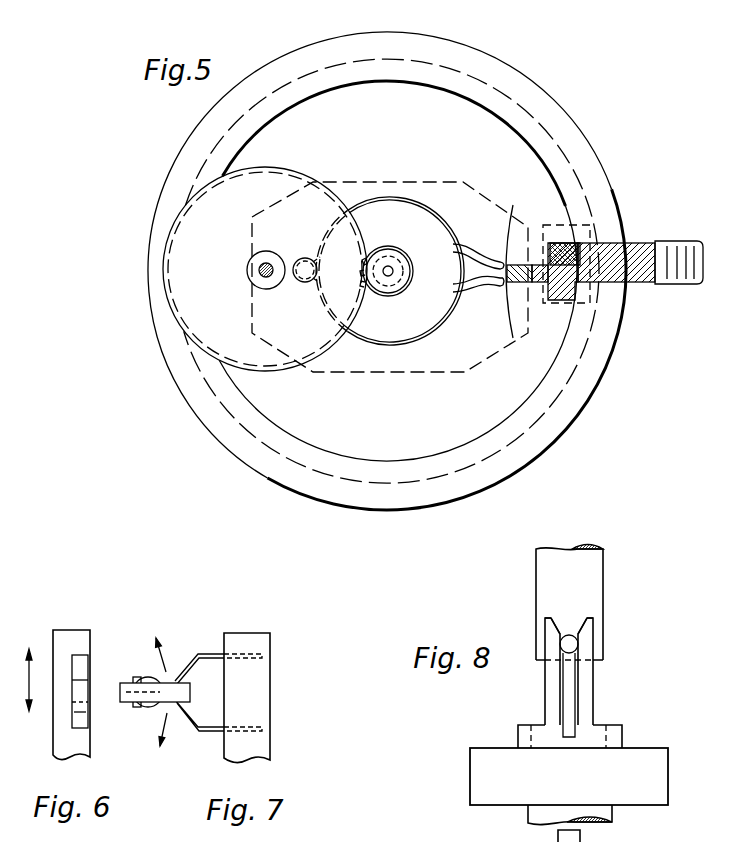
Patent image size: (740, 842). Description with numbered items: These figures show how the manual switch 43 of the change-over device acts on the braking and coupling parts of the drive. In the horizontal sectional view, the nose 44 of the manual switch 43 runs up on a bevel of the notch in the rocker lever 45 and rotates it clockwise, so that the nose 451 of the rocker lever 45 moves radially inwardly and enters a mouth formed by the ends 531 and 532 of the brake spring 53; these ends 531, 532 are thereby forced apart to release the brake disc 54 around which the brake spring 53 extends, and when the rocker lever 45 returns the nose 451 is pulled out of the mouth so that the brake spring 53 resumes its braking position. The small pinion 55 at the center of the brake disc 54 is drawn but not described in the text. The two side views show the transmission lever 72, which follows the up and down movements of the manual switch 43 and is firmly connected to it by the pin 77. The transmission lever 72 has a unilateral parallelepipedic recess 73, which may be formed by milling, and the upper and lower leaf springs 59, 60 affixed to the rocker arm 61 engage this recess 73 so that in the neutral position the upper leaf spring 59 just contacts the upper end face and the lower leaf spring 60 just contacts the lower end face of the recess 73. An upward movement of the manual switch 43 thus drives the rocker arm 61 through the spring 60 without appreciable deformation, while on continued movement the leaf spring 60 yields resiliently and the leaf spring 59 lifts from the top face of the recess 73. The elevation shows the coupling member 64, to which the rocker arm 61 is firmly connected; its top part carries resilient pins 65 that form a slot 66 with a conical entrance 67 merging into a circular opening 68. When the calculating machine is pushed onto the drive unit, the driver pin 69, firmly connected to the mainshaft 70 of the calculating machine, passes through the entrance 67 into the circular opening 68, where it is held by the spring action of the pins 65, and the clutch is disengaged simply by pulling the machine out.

In FIG. 5, the manual switch 43 is at (643, 257).
In FIG. 5, the nose 44 is at (543, 306).
In FIG. 5, the rocker lever 45 is at (521, 285).
In FIG. 5, the nose 451 is at (514, 215).
In FIG. 5, the brake spring 53 is at (397, 198).
In FIG. 5, the brake disc 54 is at (418, 232).
In FIG. 5, the pinion 55 is at (391, 274).
In FIG. 5, the brake spring end 531 is at (497, 265).
In FIG. 5, the brake spring end 532 is at (497, 281).
In FIG. 5, the transmission lever 72 is at (558, 250).
In FIG. 6, the transmission lever 72 is at (63, 648).
In FIG. 7, the transmission lever 72 is at (247, 642).
In FIG. 5, the pin 77 is at (577, 260).
In FIG. 6, the upper leaf spring 59 is at (78, 670).
In FIG. 7, the upper leaf spring 59 is at (263, 657).
In FIG. 6, the lower leaf spring 60 is at (80, 715).
In FIG. 7, the lower leaf spring 60 is at (263, 730).
In FIG. 6, the rocker arm 61 is at (82, 690).
In FIG. 7, the rocker arm 61 is at (178, 690).
In FIG. 6, the recess 73 is at (72, 707).
In FIG. 8, the coupling member 64 is at (485, 762).
In FIG. 8, the resilient pins 65 is at (553, 702).
In FIG. 8, the slot 66 is at (567, 682).
In FIG. 8, the conical entrance 67 is at (577, 624).
In FIG. 8, the circular opening 68 is at (558, 643).
In FIG. 8, the driver pin 69 is at (573, 643).
In FIG. 8, the mainshaft 70 is at (587, 565).